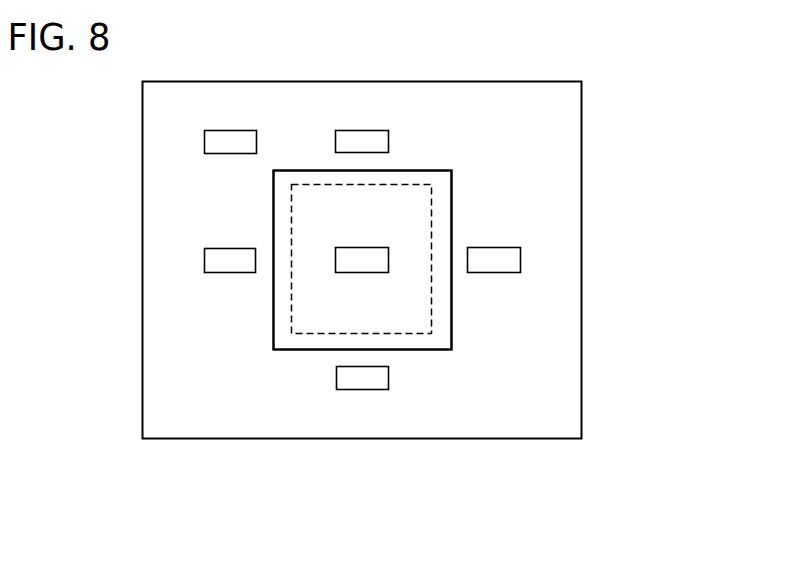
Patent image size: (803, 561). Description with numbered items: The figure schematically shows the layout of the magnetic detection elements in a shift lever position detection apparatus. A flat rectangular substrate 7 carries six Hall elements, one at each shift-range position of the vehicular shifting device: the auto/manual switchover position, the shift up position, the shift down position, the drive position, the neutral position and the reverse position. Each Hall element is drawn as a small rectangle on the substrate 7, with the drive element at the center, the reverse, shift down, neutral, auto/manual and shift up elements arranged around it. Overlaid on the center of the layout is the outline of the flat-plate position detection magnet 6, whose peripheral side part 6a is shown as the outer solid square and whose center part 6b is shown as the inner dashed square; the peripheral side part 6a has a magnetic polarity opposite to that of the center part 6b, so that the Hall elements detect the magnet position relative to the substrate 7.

The substrate 7 is at (560, 391).
The position detection magnet 6 is at (424, 177).
The peripheral side part 6a is at (438, 339).
The center part 6b is at (316, 319).